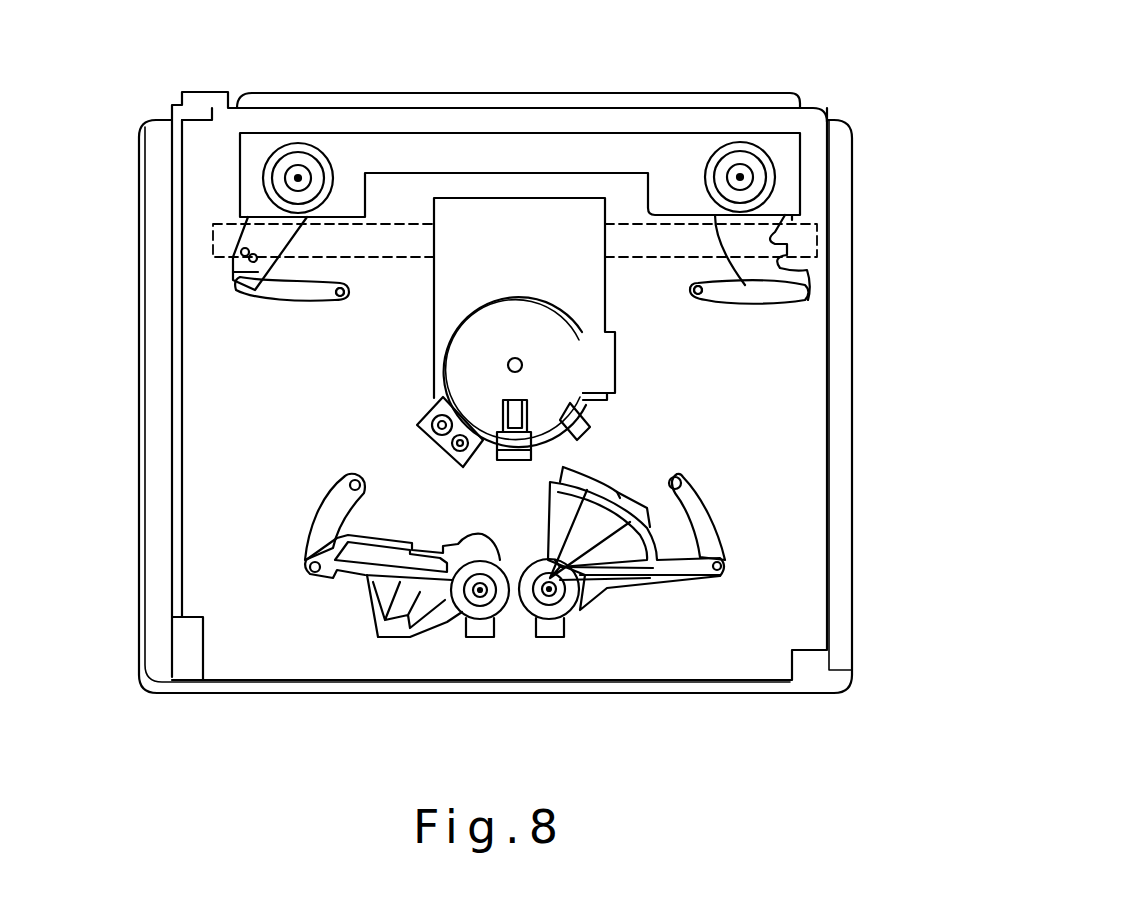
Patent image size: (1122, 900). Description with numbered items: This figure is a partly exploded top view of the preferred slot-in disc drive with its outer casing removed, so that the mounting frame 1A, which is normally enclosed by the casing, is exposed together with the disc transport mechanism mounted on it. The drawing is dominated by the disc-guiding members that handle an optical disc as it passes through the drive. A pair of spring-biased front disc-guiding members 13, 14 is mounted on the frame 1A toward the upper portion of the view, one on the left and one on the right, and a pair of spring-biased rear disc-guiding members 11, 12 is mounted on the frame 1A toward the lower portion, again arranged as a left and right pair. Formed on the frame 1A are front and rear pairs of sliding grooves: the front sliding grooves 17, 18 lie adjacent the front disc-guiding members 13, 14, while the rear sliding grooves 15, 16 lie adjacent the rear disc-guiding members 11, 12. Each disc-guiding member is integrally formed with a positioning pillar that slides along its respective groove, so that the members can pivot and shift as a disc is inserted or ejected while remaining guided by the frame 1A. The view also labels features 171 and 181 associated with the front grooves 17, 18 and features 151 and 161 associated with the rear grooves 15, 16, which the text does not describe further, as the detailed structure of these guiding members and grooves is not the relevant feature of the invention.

The mounting frame 1A is at (849, 70).
The rear disc-guiding member 11 is at (620, 582).
The rear disc-guiding member 12 is at (417, 637).
The front disc-guiding member 13 is at (233, 272).
The front disc-guiding member 14 is at (777, 273).
The rear sliding groove 15 is at (715, 540).
The right link arm 151 is at (687, 482).
The rear sliding groove 16 is at (327, 522).
The left link arm 161 is at (343, 483).
The front sliding groove 17 is at (290, 297).
The left swing arm pivot 171 is at (340, 290).
The front sliding groove 18 is at (750, 297).
The right swing arm pivot 181 is at (698, 288).